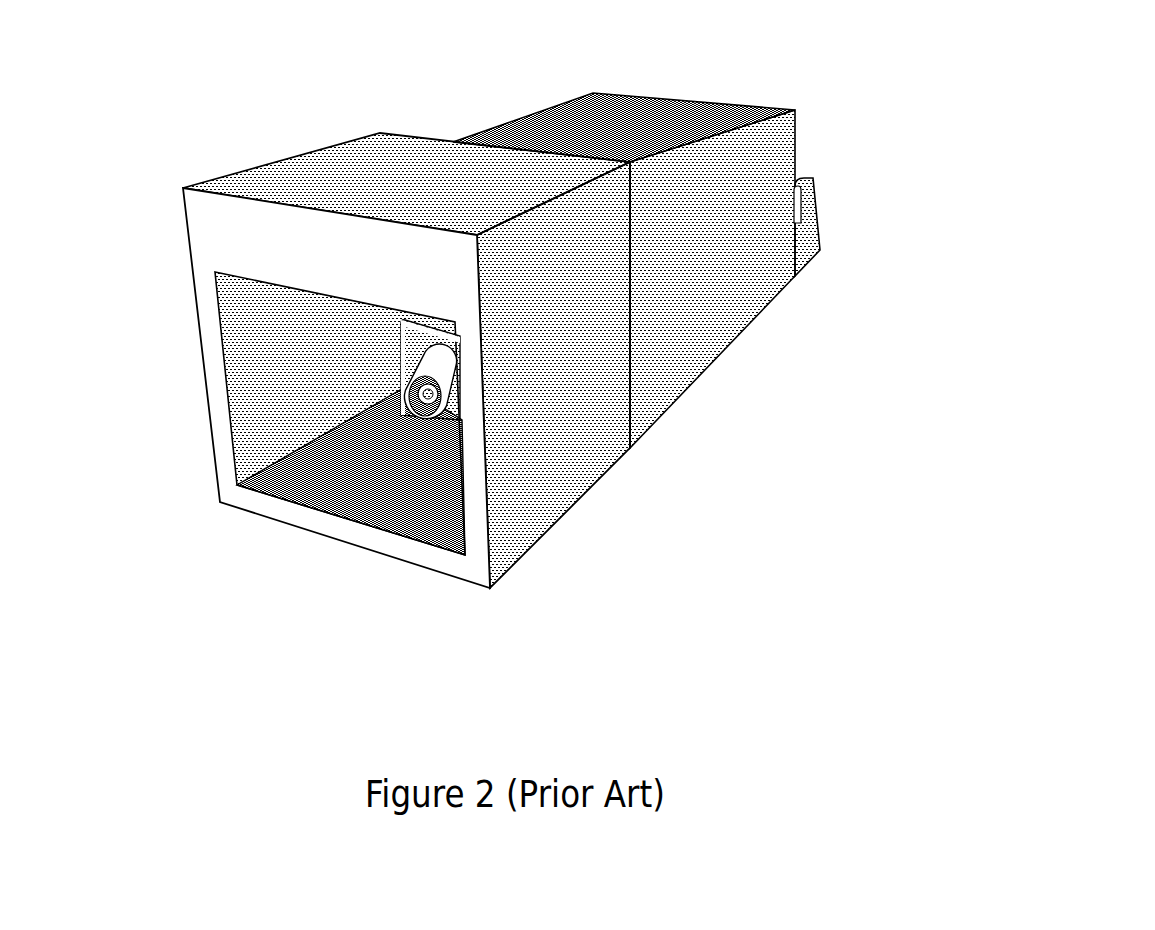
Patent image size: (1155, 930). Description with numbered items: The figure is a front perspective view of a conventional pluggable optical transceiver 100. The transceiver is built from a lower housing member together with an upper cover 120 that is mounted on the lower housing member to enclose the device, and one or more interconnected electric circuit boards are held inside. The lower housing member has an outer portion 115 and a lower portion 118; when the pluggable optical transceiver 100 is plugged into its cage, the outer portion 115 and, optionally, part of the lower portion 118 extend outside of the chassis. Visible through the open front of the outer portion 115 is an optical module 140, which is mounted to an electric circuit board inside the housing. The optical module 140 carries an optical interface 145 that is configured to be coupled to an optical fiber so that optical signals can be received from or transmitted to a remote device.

The pluggable optical transceiver 100 is at (616, 351).
The outer portion 115 is at (565, 438).
The lower portion 118 is at (813, 238).
The upper cover 120 is at (737, 273).
The optical module 140 is at (403, 347).
The optical interface 145 is at (403, 409).